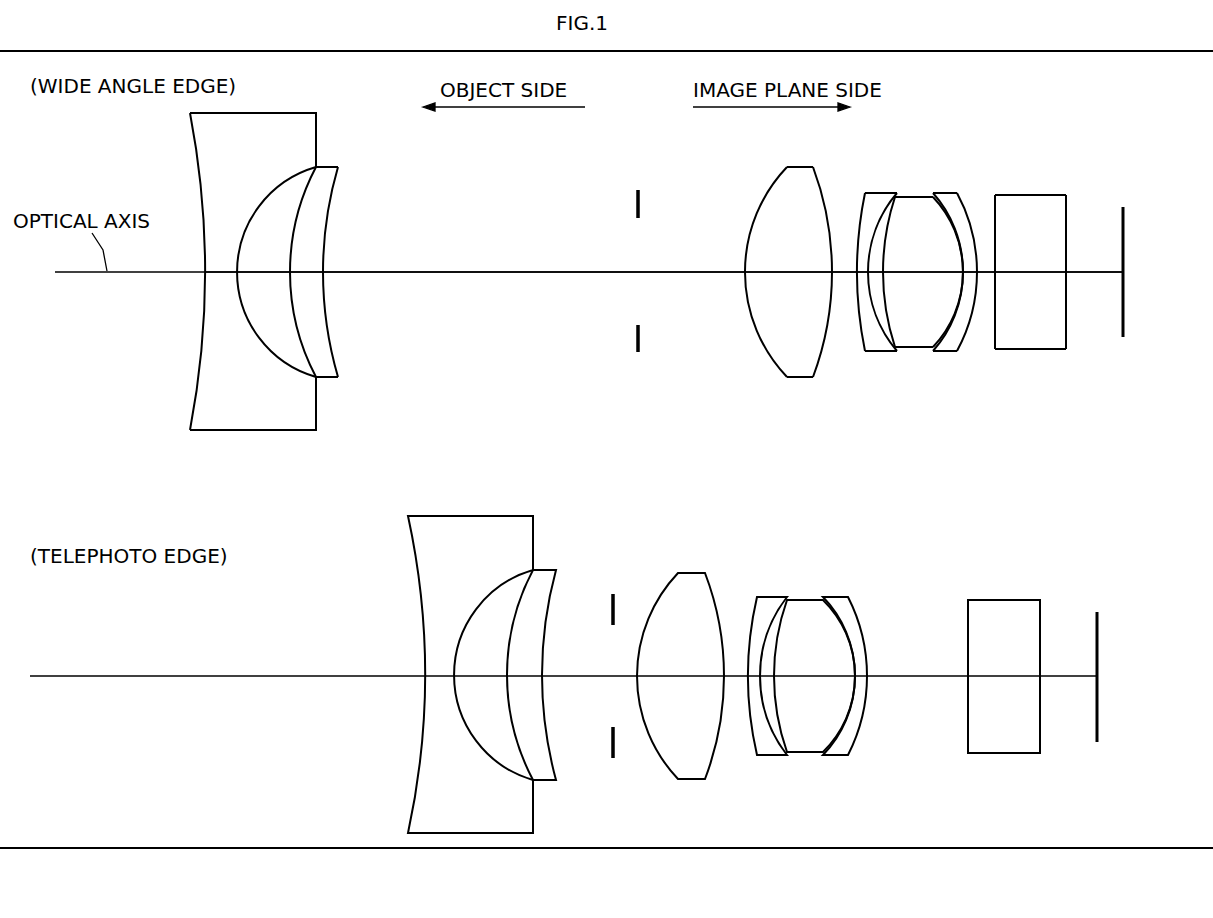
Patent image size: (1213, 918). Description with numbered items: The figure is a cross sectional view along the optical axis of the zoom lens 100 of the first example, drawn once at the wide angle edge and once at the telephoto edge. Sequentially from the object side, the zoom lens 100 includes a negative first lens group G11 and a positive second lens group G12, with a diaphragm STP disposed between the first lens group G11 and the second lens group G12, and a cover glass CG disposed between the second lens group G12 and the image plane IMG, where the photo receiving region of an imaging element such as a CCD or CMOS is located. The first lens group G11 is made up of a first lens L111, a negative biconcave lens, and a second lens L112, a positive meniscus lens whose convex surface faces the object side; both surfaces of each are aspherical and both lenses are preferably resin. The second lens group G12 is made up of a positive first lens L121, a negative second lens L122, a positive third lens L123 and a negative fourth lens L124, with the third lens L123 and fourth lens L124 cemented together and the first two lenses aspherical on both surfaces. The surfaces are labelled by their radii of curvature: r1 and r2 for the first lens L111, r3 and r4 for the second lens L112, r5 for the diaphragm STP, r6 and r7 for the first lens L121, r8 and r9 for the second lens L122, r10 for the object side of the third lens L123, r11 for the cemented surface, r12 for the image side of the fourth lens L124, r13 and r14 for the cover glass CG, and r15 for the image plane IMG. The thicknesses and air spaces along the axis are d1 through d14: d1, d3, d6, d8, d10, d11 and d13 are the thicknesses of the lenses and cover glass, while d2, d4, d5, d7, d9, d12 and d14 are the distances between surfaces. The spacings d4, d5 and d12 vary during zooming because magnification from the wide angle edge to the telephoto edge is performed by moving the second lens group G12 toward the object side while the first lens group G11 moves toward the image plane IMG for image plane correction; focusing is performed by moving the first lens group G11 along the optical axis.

The zoom lens 100 is at (1032, 90).
The first lens group G11 is at (388, 477).
The second lens group G12 is at (1000, 477).
The first lens L111 is at (250, 410).
The second lens L112 is at (328, 378).
The first lens L121 is at (800, 378).
The second lens L122 is at (877, 352).
The third lens L123 is at (910, 348).
The fourth lens L124 is at (950, 352).
The diaphragm STP is at (613, 245).
The cover glass CG is at (1038, 342).
The image plane IMG is at (1162, 250).
The radius of curvature r1 is at (168, 271).
The radius of curvature r2 is at (278, 193).
The radius of curvature r3 is at (308, 183).
The radius of curvature r4 is at (356, 272).
The radius of curvature r5 is at (653, 245).
The radius of curvature r6 is at (756, 263).
The radius of curvature r7 is at (826, 250).
The radius of curvature r8 is at (851, 254).
The radius of curvature r9 is at (882, 246).
The radius of curvature r10 is at (893, 220).
The radius of curvature r11 is at (947, 210).
The radius of curvature r12 is at (980, 246).
The radius of curvature r13 is at (1017, 253).
The radius of curvature r14 is at (1082, 253).
The radius of curvature r15 is at (1138, 250).
The thickness d1 is at (222, 273).
The distance between surfaces d2 is at (253, 273).
The thickness d3 is at (305, 275).
The distance between surfaces d4 is at (468, 273).
The distance between surfaces d5 is at (682, 277).
The thickness d6 is at (788, 275).
The distance between surfaces d7 is at (843, 273).
The thickness d8 is at (863, 273).
The distance between surfaces d9 is at (870, 273).
The thickness d10 is at (913, 273).
The thickness d11 is at (972, 274).
The distance between surfaces d12 is at (983, 274).
The thickness d13 is at (1030, 274).
The distance between surfaces d14 is at (1090, 274).